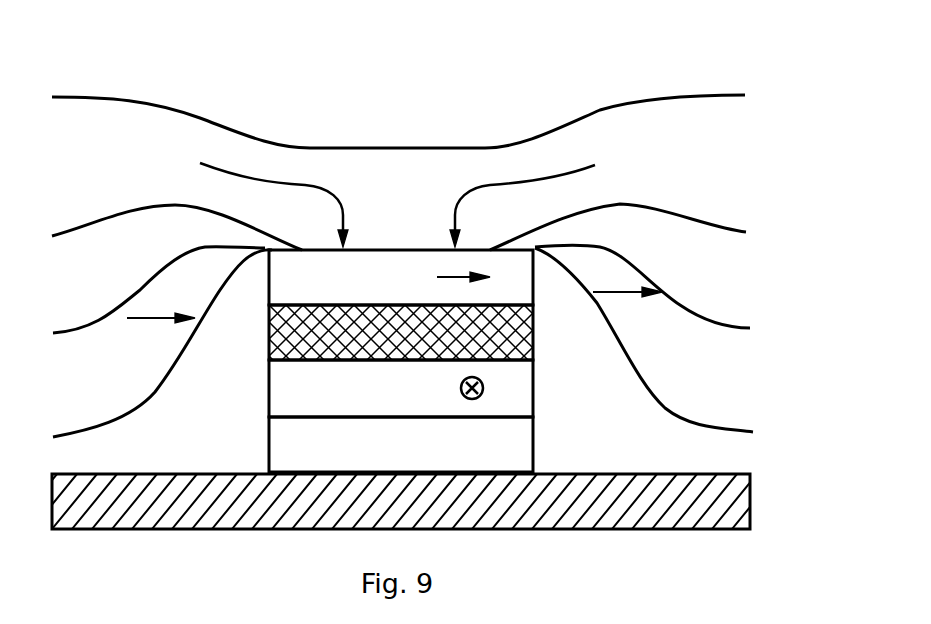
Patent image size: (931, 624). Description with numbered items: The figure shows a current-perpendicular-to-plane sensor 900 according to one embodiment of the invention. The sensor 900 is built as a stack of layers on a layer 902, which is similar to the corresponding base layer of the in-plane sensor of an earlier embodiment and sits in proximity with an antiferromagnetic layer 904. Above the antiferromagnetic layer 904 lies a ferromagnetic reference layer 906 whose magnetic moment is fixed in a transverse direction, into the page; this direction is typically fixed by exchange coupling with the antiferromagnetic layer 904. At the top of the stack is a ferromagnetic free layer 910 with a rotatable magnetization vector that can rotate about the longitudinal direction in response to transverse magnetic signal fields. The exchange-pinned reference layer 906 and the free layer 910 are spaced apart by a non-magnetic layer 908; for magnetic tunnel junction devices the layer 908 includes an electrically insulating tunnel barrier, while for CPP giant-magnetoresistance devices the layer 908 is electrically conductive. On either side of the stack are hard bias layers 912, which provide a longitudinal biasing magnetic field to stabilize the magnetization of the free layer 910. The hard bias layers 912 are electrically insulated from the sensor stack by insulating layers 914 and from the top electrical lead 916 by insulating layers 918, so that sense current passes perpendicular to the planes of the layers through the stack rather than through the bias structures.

The current-perpendicular-to-plane (CPP) sensor 900 is at (800, 167).
The layer 902 is at (401, 501).
The antiferromagnetic layer 904 is at (401, 444).
The ferromagnetic reference layer 906 is at (401, 388).
The non-magnetic layer 908 is at (401, 332).
The ferromagnetic free layer 910 is at (401, 277).
The hard bias layers 912 is at (401, 303).
The insulating layers 914 is at (403, 342).
The top electrical lead 916 is at (398, 171).
The insulating layers 918 is at (399, 246).